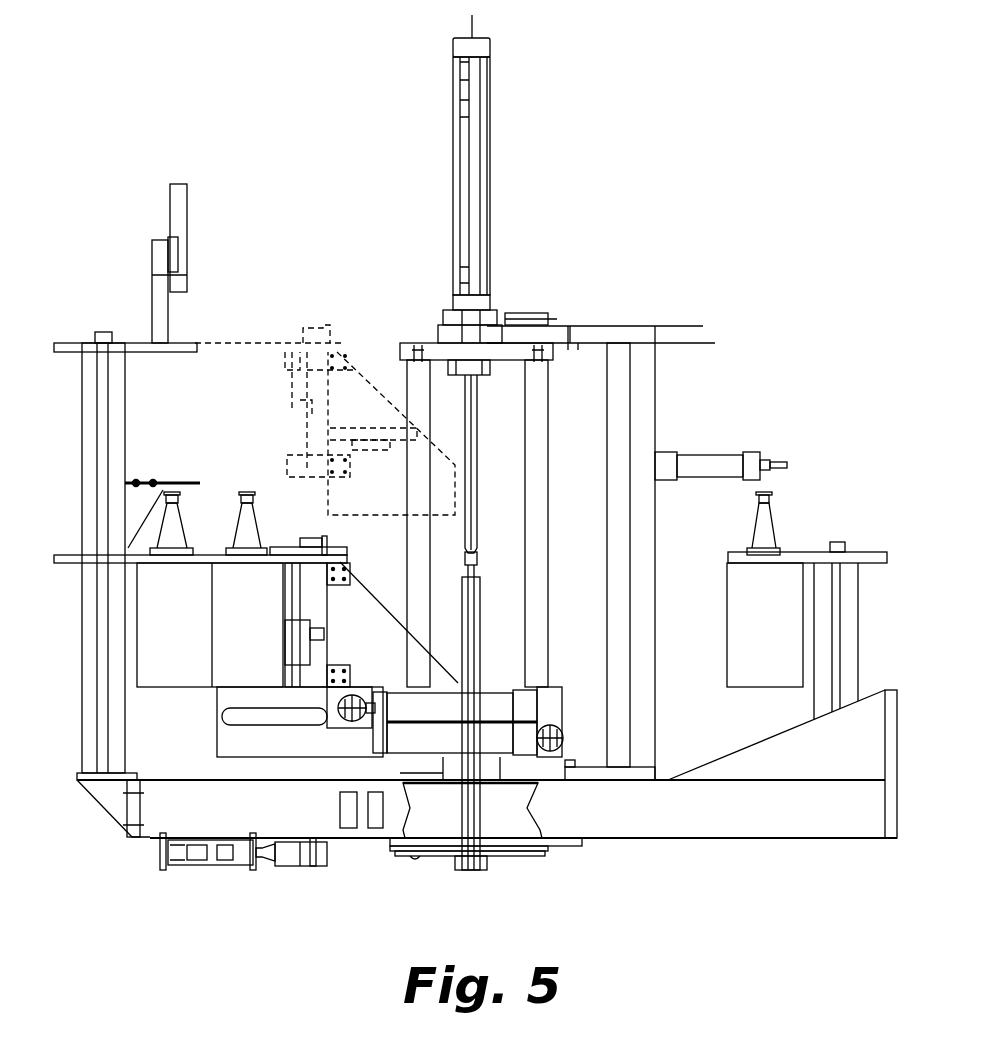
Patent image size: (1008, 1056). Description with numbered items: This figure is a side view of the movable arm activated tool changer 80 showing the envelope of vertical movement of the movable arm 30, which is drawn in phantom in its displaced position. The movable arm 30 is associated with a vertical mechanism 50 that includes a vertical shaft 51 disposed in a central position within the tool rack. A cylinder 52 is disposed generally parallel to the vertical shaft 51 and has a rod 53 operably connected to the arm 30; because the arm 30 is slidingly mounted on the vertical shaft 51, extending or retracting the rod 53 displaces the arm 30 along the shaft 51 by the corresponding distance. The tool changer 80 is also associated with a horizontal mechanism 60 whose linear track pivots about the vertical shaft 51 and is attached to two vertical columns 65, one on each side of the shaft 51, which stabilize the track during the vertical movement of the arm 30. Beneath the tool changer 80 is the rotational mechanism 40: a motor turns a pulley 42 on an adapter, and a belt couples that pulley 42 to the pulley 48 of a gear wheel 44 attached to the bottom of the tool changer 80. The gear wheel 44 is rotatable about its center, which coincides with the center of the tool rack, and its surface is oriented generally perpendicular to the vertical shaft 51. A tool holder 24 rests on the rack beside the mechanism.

The tool holder 24 is at (776, 518).
The movable arm 30 is at (245, 343).
The rotational mechanism 40 is at (398, 858).
The pulley 42 is at (352, 858).
The gear wheel 44 is at (571, 846).
The pulley 48 is at (505, 856).
The vertical mechanism 50 is at (557, 195).
The vertical shaft 51 is at (483, 660).
The cylinder 52 is at (478, 120).
The rod 53 is at (506, 272).
The horizontal mechanism 60 is at (535, 758).
The vertical columns 65 is at (548, 488).
The tool changer 80 is at (797, 845).